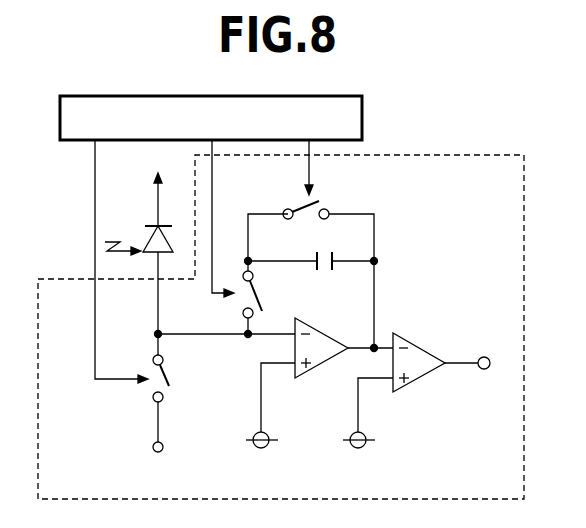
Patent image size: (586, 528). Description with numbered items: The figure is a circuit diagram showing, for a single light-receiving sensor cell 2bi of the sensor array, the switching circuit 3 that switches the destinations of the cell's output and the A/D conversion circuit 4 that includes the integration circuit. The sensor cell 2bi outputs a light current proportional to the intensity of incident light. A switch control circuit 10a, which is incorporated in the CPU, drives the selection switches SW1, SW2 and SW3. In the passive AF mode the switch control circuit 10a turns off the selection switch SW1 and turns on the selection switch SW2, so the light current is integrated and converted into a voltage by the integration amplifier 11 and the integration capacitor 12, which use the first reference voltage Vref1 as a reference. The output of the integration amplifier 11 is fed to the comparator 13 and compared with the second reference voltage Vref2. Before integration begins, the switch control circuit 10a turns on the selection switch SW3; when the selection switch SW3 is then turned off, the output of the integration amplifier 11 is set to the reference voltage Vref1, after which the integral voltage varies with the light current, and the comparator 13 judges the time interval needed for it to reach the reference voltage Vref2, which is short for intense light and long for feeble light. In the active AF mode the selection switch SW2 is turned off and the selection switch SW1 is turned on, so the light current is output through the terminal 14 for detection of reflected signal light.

The switch control circuit 10a is at (362, 119).
The switching circuit 3 is at (288, 309).
The A/D conversion circuit 4 is at (455, 153).
The sensor cell 2bi is at (145, 238).
The selection switch SW1 is at (153, 392).
The selection switch SW2 is at (244, 297).
The selection switch SW3 is at (325, 204).
The integration capacitor 12 is at (330, 253).
The integration amplifier 11 is at (325, 364).
The comparator 13 is at (424, 380).
The terminal 14 is at (166, 446).
The first reference voltage Vref1 is at (265, 450).
The second reference voltage Vref2 is at (362, 450).